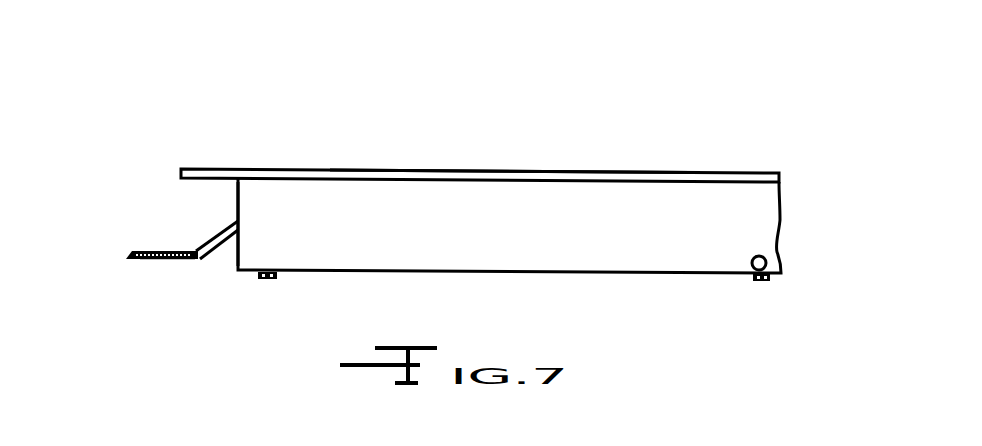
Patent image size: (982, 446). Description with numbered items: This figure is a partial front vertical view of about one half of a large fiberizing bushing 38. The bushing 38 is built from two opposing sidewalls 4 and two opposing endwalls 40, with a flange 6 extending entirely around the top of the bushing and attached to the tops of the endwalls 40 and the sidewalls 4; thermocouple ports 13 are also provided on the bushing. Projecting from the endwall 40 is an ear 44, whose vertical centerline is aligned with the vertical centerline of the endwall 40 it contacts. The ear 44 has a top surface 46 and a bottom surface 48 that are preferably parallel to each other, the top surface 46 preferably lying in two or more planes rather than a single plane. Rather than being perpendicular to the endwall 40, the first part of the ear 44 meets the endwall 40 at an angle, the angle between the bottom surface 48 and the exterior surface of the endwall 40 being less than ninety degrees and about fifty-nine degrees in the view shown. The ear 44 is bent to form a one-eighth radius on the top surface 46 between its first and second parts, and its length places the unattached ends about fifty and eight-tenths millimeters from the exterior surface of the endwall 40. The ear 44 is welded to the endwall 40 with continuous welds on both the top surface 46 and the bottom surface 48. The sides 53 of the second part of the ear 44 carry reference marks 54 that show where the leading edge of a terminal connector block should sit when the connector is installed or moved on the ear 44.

The sidewall 4 is at (550, 190).
The flange 6 is at (210, 169).
The thermocouple port 13 is at (766, 263).
The bushing 38 is at (400, 166).
The endwall 40 is at (238, 206).
The ear 44 is at (178, 270).
The top surface 46 is at (209, 243).
The bottom surface 48 is at (215, 249).
The side 53 is at (130, 255).
The reference mark 54 is at (150, 259).